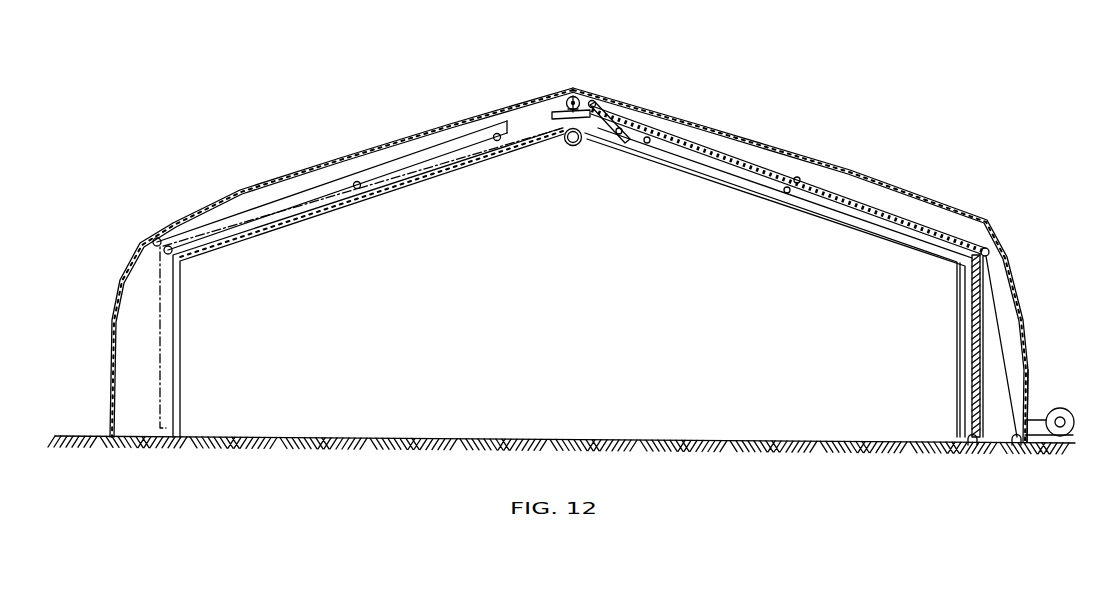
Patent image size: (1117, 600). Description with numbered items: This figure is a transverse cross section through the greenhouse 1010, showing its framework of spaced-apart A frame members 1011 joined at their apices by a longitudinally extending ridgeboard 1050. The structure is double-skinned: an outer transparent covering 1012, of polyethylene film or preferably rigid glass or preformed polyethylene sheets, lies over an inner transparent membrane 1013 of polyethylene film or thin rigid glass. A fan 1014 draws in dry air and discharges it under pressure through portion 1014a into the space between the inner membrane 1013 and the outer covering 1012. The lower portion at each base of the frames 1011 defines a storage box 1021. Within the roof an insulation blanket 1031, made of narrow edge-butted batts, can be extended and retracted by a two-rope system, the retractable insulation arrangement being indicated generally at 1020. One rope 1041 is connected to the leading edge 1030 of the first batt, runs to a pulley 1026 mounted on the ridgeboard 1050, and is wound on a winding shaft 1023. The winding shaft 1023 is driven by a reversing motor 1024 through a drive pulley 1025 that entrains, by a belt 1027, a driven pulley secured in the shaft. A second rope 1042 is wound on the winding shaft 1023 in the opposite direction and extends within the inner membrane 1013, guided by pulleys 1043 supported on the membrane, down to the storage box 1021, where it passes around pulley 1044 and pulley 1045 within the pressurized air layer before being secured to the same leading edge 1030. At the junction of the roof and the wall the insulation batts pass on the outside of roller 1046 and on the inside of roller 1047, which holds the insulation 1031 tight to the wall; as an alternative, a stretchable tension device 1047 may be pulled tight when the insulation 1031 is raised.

The greenhouse 1010 is at (784, 92).
The A frame members 1011 is at (817, 207).
The outer transparent covering 1012 is at (867, 182).
The inner transparent membrane 1013 is at (863, 233).
The fan 1014 is at (1067, 408).
The portion 1014a is at (1028, 416).
The door assembly 1020 is at (920, 218).
The storage box 1021 is at (1031, 382).
The winding shaft 1023 is at (576, 94).
The reversing motor 1024 is at (560, 142).
The drive pulley 1025 is at (570, 150).
The pulley 1026 is at (594, 101).
The belt 1027 is at (557, 103).
The leading edge 1030 is at (640, 108).
The insulation blanket 1031 is at (818, 188).
The rope 1041 is at (612, 152).
The second rope 1042 is at (619, 135).
The pulleys 1043 is at (647, 143).
The pulley 1044 is at (971, 448).
The pulley 1045 is at (1015, 448).
The roller 1046 is at (968, 266).
The roller 1047 is at (990, 251).
The ridgeboard 1050 is at (567, 98).